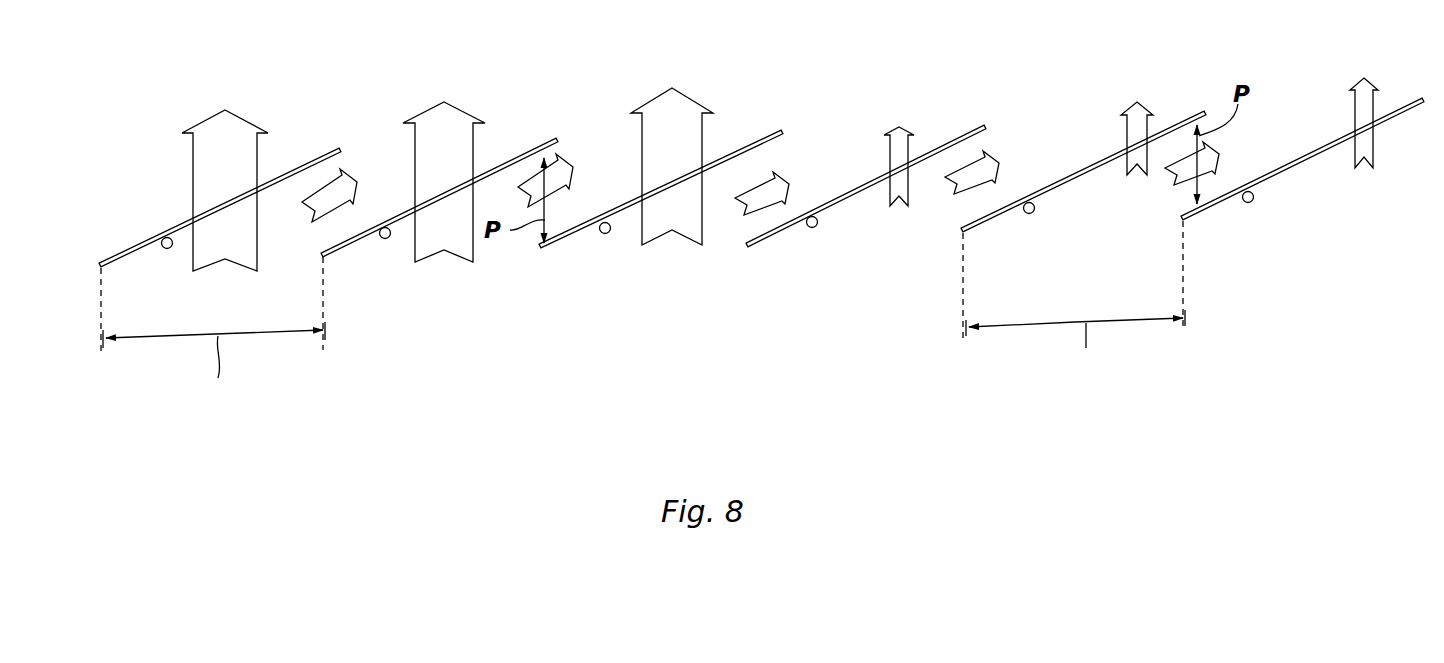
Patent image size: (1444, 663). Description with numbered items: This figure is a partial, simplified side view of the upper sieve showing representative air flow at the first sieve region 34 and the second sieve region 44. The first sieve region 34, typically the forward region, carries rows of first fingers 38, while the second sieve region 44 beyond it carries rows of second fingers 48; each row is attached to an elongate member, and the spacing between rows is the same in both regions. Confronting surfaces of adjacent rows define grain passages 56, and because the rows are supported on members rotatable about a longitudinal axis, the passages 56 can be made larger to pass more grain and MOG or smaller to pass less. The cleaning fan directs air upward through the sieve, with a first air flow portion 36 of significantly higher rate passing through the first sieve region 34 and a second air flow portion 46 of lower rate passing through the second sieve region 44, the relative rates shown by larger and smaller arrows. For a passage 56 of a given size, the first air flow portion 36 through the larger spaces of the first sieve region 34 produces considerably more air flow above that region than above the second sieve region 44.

The first sieve region 34 is at (463, 76).
The first air flow portion 36 is at (358, 172).
The first fingers 38 is at (139, 242).
The second sieve region 44 is at (1093, 82).
The second air flow portion 46 is at (890, 147).
The second fingers 48 is at (975, 226).
The grain passages 56 is at (316, 177).